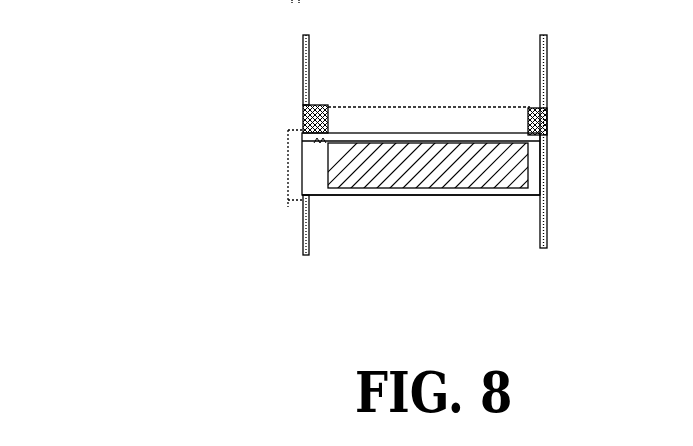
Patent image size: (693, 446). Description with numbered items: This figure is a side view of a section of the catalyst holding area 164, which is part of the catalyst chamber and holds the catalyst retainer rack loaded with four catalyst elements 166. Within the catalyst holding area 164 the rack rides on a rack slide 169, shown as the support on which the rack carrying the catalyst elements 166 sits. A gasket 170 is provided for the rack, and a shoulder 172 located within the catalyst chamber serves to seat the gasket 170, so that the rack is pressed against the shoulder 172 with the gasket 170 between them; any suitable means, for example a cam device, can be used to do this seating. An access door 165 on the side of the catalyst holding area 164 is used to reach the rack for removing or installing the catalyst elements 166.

The catalyst holding area 164 is at (247, 197).
The access door 165 is at (292, 168).
The catalyst elements 166 is at (390, 187).
The rack slide 169 is at (485, 195).
The gasket 170 is at (543, 150).
The shoulder 172 is at (305, 100).